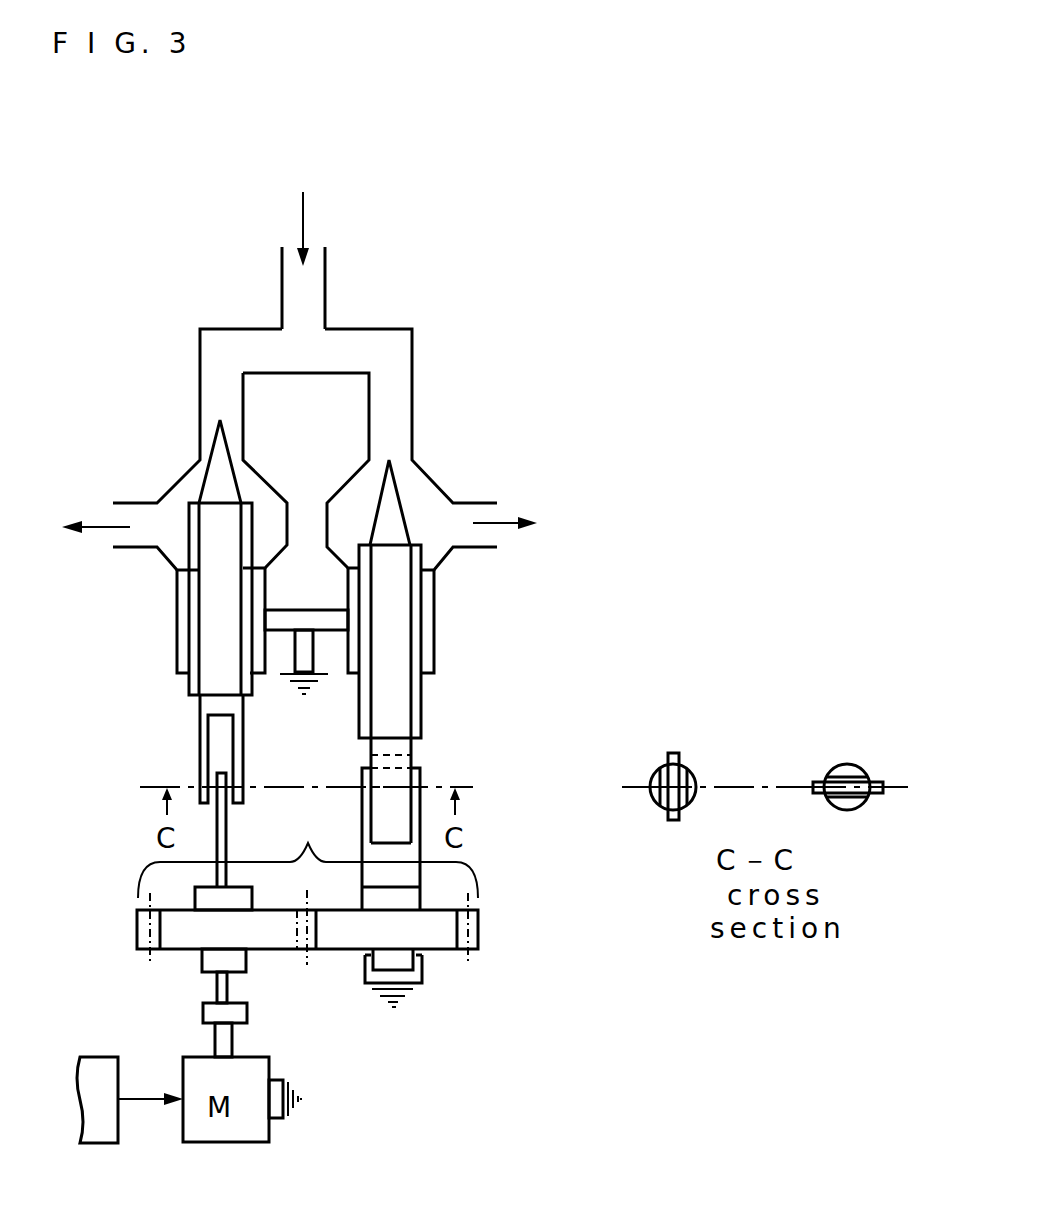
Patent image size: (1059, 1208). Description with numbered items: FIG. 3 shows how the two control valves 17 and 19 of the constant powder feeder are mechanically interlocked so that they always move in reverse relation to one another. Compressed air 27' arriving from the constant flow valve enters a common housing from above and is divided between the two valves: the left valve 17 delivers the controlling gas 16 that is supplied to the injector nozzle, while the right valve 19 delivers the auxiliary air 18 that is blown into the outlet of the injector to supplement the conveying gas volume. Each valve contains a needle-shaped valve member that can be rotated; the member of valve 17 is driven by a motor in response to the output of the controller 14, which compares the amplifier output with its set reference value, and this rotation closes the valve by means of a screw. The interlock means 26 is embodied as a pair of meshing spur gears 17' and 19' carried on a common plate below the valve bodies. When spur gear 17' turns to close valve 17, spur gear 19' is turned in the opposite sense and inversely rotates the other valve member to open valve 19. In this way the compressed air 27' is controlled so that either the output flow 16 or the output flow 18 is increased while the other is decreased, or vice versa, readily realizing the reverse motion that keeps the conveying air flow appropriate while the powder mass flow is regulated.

The compressed air 27' is at (365, 257).
The control valve 17 is at (182, 501).
The control valve 19 is at (393, 501).
The controlling gas 16 is at (102, 525).
The auxiliary air 18 is at (507, 520).
The interlock means 26 is at (307, 887).
The spur gear 17' is at (168, 972).
The spur gear 19' is at (456, 983).
The regulator 14 is at (120, 1078).